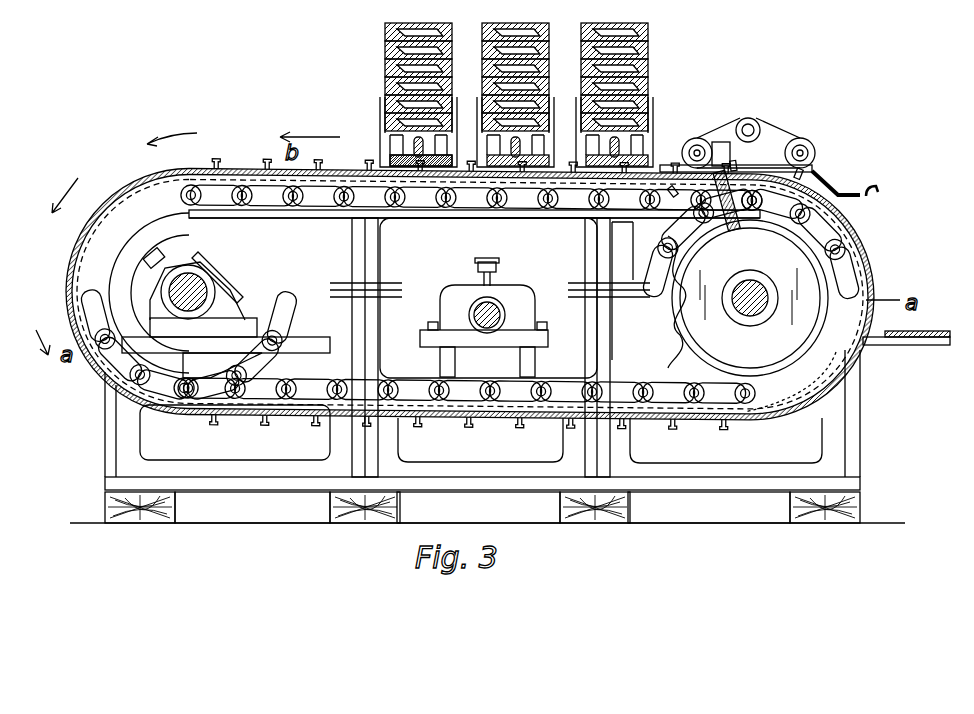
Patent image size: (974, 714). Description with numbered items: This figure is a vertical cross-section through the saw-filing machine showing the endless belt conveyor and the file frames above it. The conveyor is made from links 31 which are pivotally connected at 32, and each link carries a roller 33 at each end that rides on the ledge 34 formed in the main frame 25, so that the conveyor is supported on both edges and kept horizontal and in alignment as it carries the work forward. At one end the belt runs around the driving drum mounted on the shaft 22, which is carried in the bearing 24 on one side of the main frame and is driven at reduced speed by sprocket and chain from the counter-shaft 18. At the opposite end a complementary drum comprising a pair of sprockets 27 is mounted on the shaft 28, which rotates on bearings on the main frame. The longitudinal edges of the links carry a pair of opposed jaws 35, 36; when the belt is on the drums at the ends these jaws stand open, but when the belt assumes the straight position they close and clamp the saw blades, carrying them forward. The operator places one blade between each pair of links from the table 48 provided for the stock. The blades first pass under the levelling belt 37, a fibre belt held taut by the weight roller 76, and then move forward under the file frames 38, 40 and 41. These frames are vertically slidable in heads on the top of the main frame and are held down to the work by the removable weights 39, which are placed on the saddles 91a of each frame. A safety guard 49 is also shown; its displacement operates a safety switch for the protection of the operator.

The counter-shaft 18 is at (506, 311).
The shaft 22 is at (216, 296).
The bearing 24 is at (236, 269).
The main frame 25 is at (220, 493).
The sprockets 27 is at (658, 306).
The shaft 28 is at (772, 270).
The links 31 is at (108, 224).
The pivotal connection 32 is at (76, 242).
The roller 33 is at (248, 206).
The ledge 34 is at (290, 220).
The jaw 35 is at (868, 256).
The jaw 36 is at (858, 235).
The levelling belt 37 is at (823, 191).
The file frame 38 is at (651, 170).
The removable weights 39 is at (388, 91).
The file frame 40 is at (548, 160).
The file frame 41 is at (388, 160).
The table 48 is at (913, 340).
The safety guard 49 is at (886, 193).
The weight roller 76 is at (761, 131).
The saddles 91a is at (382, 134).